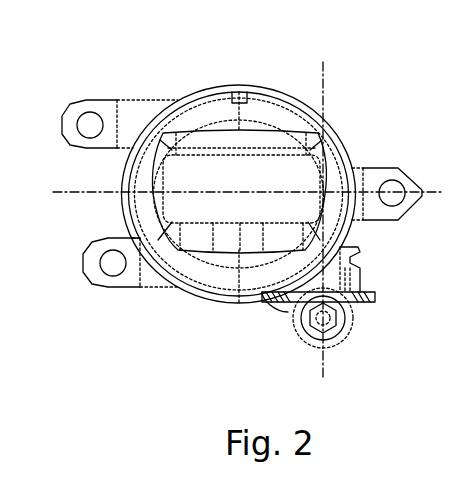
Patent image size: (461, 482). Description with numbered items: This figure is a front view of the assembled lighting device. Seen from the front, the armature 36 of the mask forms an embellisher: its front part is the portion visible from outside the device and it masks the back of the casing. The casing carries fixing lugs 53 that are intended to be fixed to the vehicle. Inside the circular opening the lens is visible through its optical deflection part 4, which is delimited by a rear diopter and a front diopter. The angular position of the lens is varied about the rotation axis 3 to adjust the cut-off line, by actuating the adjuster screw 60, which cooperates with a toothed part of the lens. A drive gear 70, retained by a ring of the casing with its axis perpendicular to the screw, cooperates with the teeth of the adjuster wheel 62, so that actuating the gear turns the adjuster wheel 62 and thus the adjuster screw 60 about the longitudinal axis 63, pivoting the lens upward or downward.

The rotation axis 3 is at (65, 192).
The deflection part 4 is at (285, 182).
The armature 36 is at (148, 210).
The fixing lugs 53 is at (108, 107).
The adjuster screw 60 is at (357, 258).
The adjuster wheel 62 is at (373, 303).
The longitudinal axis 63 is at (323, 63).
The drive gear 70 is at (315, 338).